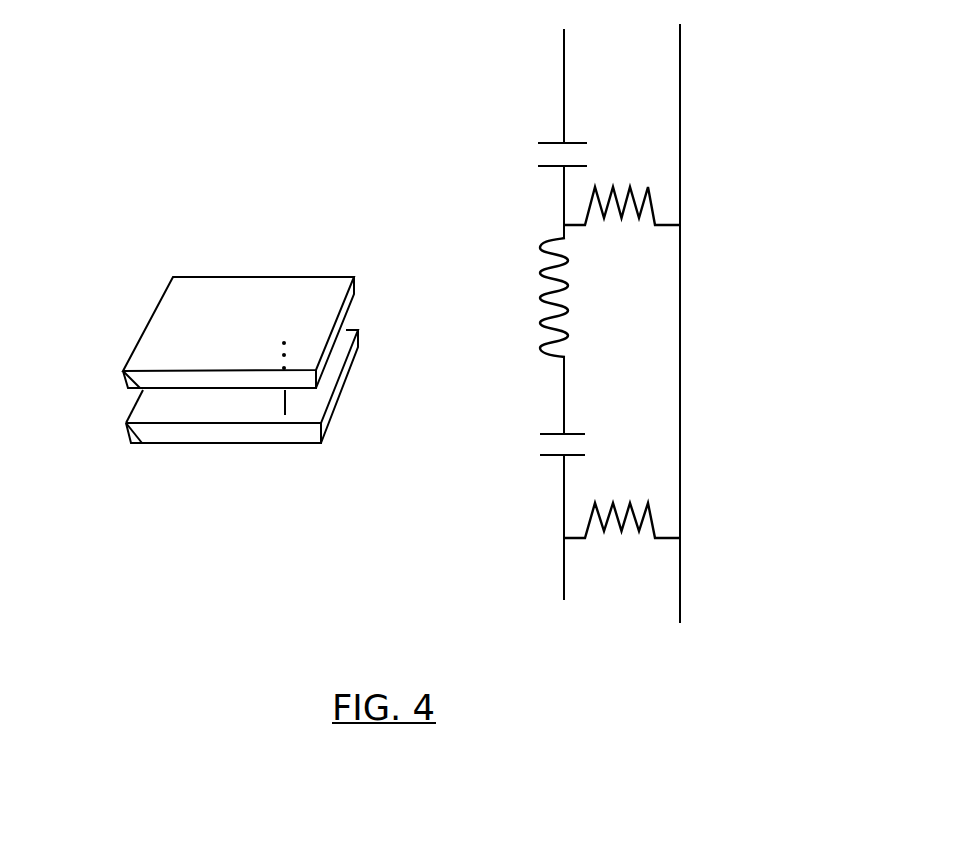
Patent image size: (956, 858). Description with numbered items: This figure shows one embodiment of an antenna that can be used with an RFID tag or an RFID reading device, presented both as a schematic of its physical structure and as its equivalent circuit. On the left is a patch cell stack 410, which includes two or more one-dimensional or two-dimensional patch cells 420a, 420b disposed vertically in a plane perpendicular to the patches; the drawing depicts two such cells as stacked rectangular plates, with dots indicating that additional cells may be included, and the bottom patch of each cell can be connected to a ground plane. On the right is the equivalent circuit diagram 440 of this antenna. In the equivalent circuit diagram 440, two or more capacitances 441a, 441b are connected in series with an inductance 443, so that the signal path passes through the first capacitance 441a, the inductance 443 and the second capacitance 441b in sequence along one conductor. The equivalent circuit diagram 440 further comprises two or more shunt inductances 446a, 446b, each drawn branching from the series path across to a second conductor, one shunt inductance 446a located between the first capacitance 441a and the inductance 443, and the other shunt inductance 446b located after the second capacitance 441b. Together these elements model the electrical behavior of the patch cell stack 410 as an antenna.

The patch cell stack 410 is at (152, 268).
The patch cell 420a is at (238, 332).
The patch cell 420b is at (242, 386).
The equivalent circuit diagram 440 is at (698, 95).
The capacitance 441a is at (528, 152).
The capacitance 441b is at (526, 447).
The inductance 443 is at (526, 297).
The shunt inductance 446a is at (622, 189).
The shunt inductance 446b is at (622, 501).